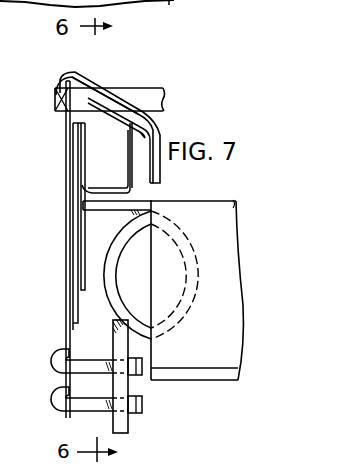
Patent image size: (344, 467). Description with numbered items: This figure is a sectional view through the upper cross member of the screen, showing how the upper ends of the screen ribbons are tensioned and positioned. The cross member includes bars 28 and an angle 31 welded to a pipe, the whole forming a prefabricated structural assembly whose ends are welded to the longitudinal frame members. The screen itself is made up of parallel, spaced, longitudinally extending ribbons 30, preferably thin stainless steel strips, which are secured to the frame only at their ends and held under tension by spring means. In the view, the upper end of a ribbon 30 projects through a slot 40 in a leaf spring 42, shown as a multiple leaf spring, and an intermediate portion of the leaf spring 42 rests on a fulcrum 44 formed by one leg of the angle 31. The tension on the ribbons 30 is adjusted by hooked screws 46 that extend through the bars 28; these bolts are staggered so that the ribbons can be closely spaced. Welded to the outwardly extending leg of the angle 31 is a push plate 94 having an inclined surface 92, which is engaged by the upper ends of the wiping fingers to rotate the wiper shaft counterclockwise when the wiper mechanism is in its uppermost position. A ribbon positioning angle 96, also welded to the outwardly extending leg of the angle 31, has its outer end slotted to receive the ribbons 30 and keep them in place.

The bars 28 is at (118, 353).
The ribbons 30 is at (57, 103).
The angle 31 is at (143, 143).
The slots 40 is at (72, 79).
The leaf springs 42 is at (62, 167).
The fulcrum 44 is at (83, 205).
The hooked screws 46 is at (137, 377).
The inclined surface 92 is at (97, 88).
The push plate 94 is at (107, 100).
The ribbon positioning angle 96 is at (127, 118).